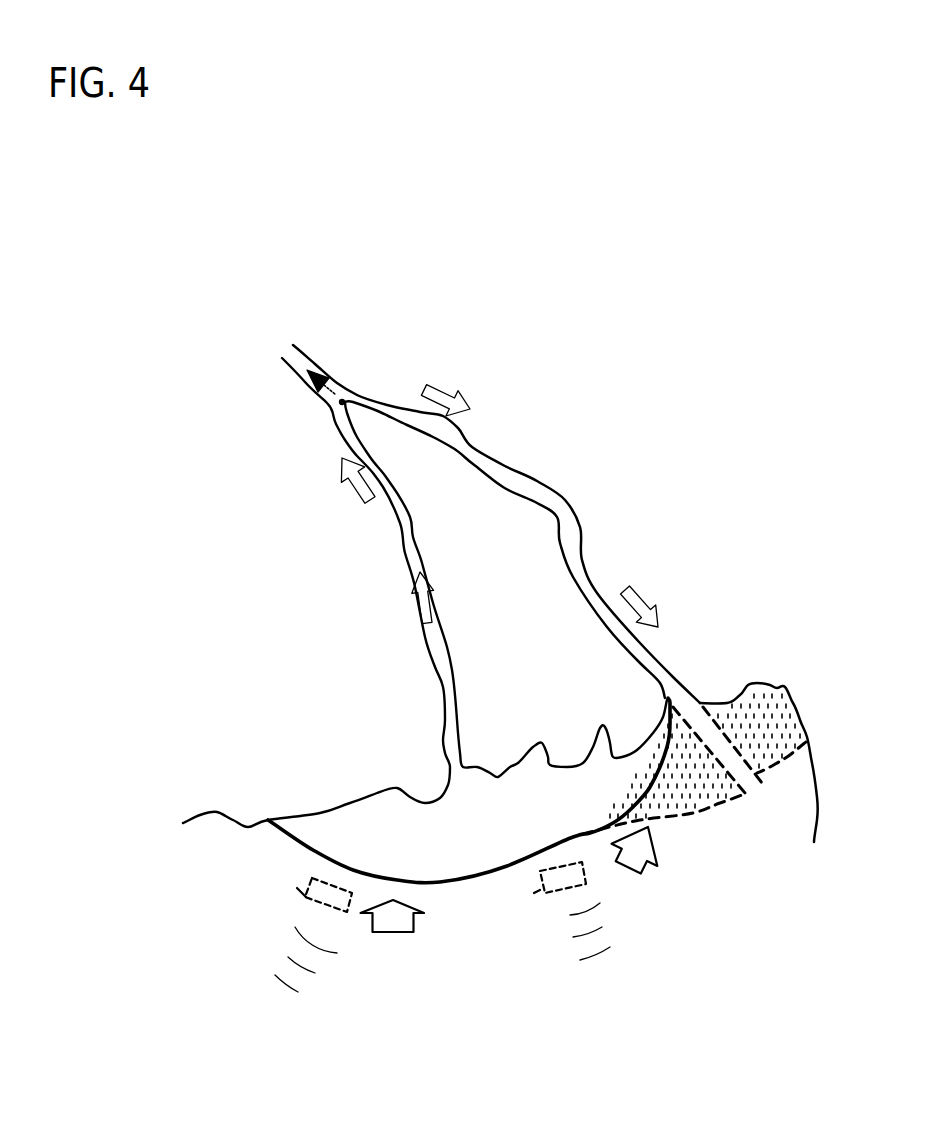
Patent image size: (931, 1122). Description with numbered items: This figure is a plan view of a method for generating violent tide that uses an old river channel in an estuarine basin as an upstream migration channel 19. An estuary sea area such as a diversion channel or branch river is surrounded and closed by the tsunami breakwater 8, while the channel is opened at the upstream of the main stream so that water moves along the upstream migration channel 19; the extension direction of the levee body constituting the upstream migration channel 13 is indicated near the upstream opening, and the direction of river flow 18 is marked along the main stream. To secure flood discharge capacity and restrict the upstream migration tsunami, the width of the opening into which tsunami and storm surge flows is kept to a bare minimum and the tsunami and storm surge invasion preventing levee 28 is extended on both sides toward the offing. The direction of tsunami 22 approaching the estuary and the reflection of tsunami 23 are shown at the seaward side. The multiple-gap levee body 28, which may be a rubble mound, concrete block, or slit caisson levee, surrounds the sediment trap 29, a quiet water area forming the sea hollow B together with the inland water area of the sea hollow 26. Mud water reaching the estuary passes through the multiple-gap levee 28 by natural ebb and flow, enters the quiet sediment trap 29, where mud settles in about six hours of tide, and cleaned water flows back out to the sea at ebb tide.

The tsunami breakwater 8 is at (447, 880).
The extension direction of levee body constituting upstream migration channel 13 is at (335, 388).
The direction of river flow 18 is at (567, 527).
The upstream migration channel 19 is at (417, 567).
The direction of tsunami 22 is at (395, 917).
The reflection of tsunami 23 is at (325, 897).
The inland water area of sea hollow (UTSURO) B 26 is at (455, 817).
The tsunami and storm surge invasion preventing levee 28 is at (713, 753).
The sediment trap of sea hollow (UTSURO) 29 is at (678, 753).